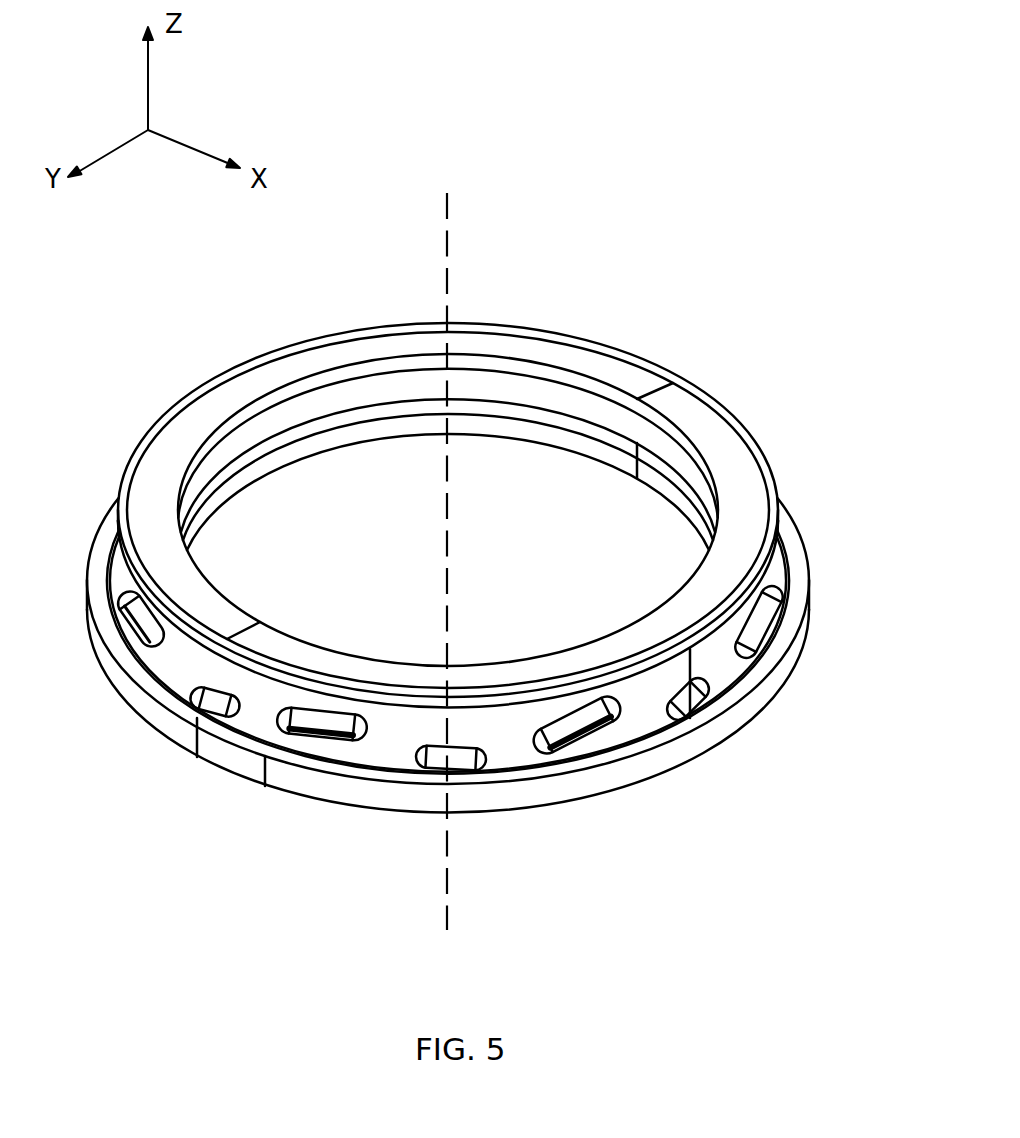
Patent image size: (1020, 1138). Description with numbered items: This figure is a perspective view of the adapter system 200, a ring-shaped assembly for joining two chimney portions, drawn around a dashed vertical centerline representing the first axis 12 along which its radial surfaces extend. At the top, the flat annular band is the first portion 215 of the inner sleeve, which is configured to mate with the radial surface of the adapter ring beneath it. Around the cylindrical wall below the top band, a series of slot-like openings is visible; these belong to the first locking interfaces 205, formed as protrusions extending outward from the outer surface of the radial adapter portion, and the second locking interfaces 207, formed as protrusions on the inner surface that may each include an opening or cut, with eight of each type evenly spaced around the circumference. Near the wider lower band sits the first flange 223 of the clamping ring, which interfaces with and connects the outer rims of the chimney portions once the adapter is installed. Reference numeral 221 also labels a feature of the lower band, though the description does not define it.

The first axis 12 is at (447, 288).
The adapter system 200 is at (800, 285).
The first portion 215 is at (223, 397).
The first locking interfaces 205 is at (140, 625).
The second locking interfaces 207 is at (222, 705).
The bottom flange 221 is at (663, 760).
The first flange 223 is at (767, 673).